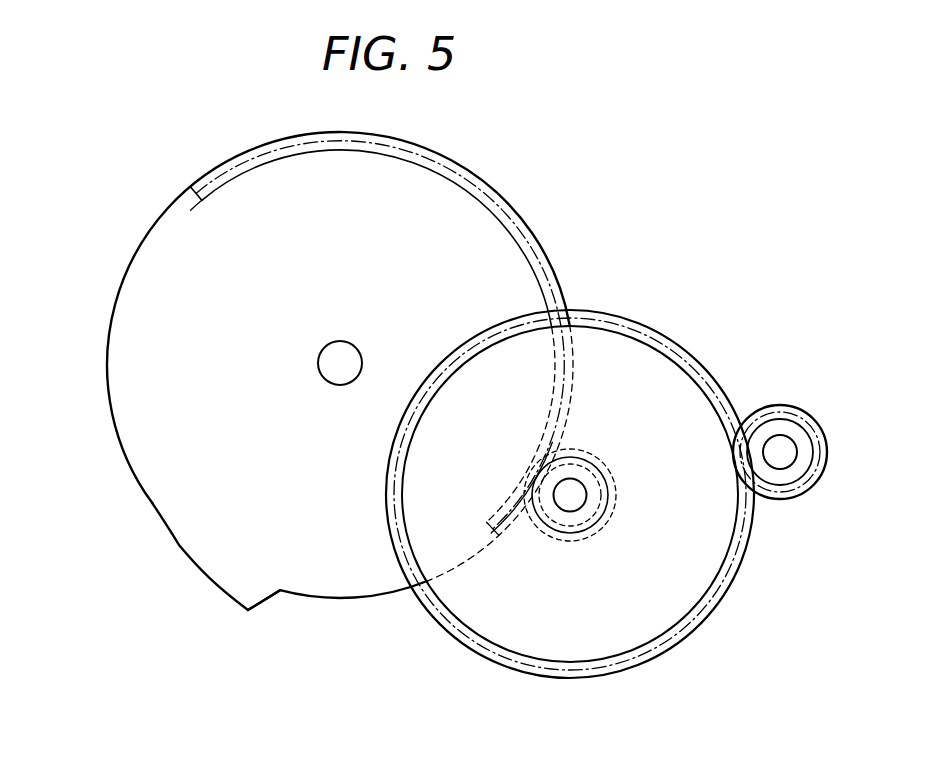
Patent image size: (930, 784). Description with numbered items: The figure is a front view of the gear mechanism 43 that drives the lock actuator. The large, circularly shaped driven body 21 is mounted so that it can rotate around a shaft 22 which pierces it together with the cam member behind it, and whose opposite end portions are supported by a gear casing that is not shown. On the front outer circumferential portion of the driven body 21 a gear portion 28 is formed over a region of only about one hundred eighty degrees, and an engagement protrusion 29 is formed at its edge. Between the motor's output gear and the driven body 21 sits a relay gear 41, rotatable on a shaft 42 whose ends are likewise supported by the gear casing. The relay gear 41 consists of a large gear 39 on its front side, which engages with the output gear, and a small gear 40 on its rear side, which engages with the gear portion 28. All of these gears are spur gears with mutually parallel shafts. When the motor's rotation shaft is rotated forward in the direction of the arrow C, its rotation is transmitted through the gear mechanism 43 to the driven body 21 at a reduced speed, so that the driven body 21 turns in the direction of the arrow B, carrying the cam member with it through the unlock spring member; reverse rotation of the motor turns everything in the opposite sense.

The driven body 21 is at (134, 458).
The shaft 22 is at (336, 372).
The gear portion 28 is at (512, 208).
The engagement protrusion 29 is at (249, 606).
The large gear 39 is at (713, 618).
The small gear 40 is at (612, 523).
The relay gear 41 is at (586, 647).
The shaft 42 is at (563, 512).
The gear mechanism 43 is at (457, 662).
The arrow B is at (152, 184).
The arrow C is at (836, 430).